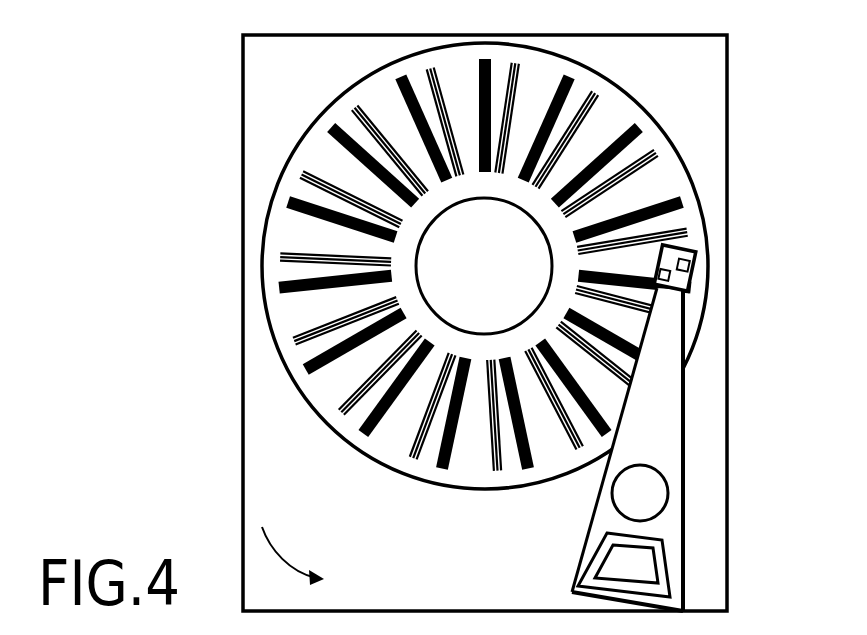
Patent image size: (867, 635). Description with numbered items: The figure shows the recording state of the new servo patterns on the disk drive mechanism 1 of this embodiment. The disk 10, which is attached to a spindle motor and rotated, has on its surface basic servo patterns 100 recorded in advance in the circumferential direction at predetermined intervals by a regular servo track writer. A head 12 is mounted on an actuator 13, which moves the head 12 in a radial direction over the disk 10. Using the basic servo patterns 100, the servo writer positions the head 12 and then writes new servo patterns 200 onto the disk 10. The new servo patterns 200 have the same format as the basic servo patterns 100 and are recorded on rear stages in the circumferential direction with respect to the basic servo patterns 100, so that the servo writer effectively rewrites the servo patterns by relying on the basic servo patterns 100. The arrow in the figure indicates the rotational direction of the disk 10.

The disk drive mechanism 1 is at (243, 88).
The disk 10 is at (680, 156).
The head 12 is at (695, 272).
The actuator 13 is at (670, 443).
The basic servo pattern 100 is at (306, 366).
The new servo pattern 200 is at (306, 334).